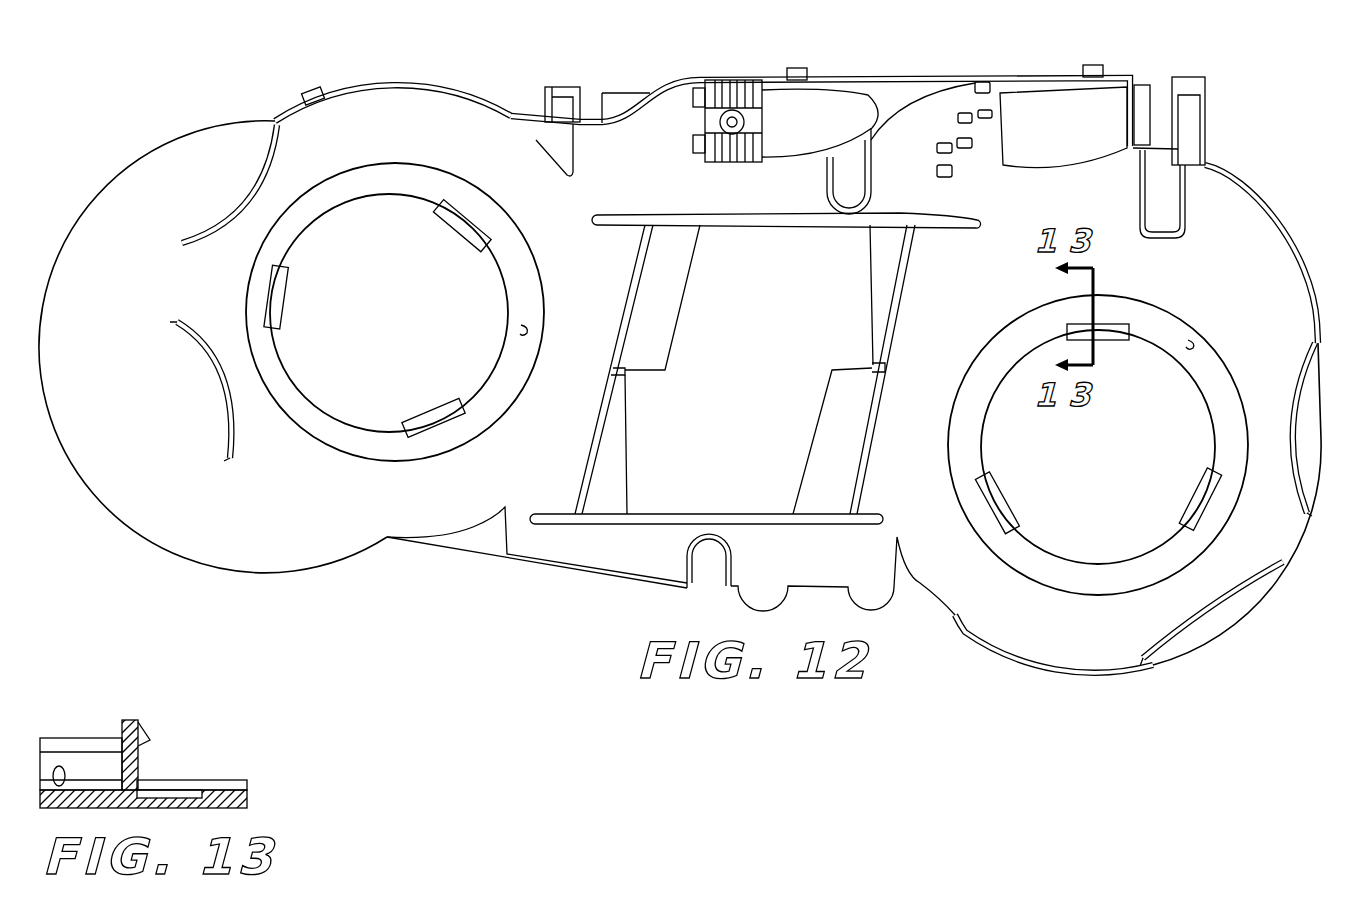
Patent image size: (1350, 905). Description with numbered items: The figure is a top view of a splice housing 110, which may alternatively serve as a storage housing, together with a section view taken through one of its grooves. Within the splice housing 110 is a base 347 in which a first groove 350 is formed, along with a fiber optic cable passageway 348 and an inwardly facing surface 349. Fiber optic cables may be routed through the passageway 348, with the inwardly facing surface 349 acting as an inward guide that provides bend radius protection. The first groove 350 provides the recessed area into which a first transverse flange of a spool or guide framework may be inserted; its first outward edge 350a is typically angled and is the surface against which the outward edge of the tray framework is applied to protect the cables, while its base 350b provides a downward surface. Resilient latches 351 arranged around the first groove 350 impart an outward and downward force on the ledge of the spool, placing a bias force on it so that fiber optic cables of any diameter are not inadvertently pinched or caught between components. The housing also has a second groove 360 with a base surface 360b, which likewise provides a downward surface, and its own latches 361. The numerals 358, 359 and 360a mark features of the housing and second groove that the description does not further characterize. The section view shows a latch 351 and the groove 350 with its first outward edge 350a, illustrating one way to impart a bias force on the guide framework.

In FIG. 12, the splice housing 110 is at (575, 594).
In FIG. 12, the base 347 is at (903, 455).
In FIG. 12, the fiber optic cable passageway 348 is at (1130, 628).
In FIG. 12, the inwardly facing surface 349 is at (1052, 657).
In FIG. 12, the first groove 350 is at (1030, 331).
In FIG. 13, the first groove 350 is at (175, 782).
In FIG. 12, the first outward edge 350a is at (1151, 576).
In FIG. 13, the first outward edge 350a is at (215, 797).
In FIG. 12, the base 350b is at (1293, 329).
In FIG. 12, the resilient latch 351 is at (998, 485).
In FIG. 13, the resilient latch 351 is at (140, 730).
In FIG. 12, the supply reel compartment 358 is at (366, 112).
In FIG. 12, the compartment rim 359 is at (281, 496).
In FIG. 12, the second groove 360 is at (383, 182).
In FIG. 12, the hub tab 360a is at (522, 383).
In FIG. 12, the base surface 360b is at (527, 332).
In FIG. 12, the latches 361 is at (463, 228).